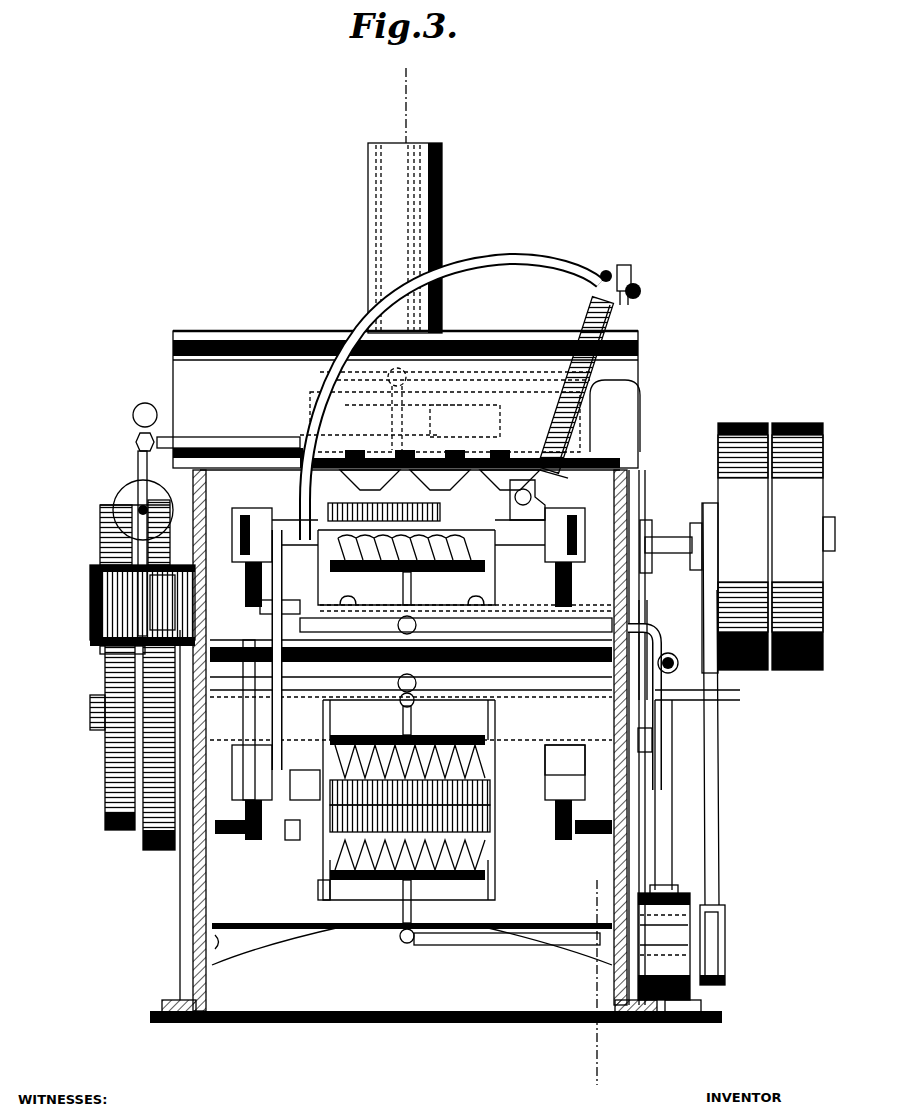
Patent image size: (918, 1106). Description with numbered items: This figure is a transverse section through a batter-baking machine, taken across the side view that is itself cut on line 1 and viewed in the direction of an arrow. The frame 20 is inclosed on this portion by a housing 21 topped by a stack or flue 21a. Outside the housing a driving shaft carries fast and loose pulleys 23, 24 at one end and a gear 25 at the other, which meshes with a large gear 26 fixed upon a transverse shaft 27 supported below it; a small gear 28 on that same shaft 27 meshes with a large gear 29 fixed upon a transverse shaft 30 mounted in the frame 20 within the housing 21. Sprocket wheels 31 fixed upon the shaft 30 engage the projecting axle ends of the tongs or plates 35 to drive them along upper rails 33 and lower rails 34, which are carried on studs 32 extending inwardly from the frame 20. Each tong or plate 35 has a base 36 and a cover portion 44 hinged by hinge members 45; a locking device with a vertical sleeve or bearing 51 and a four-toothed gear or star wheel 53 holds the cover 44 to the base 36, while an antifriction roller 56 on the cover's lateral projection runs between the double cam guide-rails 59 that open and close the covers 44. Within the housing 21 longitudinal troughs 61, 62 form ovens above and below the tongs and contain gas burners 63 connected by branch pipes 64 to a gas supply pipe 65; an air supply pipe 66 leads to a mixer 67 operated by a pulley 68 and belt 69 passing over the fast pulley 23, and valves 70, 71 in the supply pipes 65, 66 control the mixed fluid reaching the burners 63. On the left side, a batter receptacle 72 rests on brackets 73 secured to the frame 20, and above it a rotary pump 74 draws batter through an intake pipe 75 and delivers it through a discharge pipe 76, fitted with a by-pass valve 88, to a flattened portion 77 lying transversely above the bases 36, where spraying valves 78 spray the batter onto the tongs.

The section line 1 is at (509, 576).
The stack or flue 21a is at (368, 220).
The housing 21 is at (406, 400).
The double cam guide-rails 59 is at (576, 264).
The antifriction roller 56 is at (623, 264).
The cover portion 44 is at (560, 405).
The hinge member 45 is at (527, 495).
The base 36 is at (409, 654).
The gas burner 63 is at (407, 723).
The branch pipe 64 is at (462, 960).
The longitudinal trough 61 is at (360, 401).
The discharge pipe 76 is at (258, 436).
The by-pass valve 88 is at (134, 442).
The rotary pump 74 is at (136, 490).
The gear 25 is at (100, 510).
The batter receptacle 72 is at (90, 602).
The large gear 26 is at (82, 791).
The bracket 73 is at (100, 660).
The transverse shaft 27 is at (90, 710).
The small gear 28 is at (105, 752).
The large gear 29 is at (160, 852).
The frame 20 is at (207, 892).
The upper roller guide or rail 33 is at (240, 530).
The stud 32 is at (409, 692).
The sprocket wheel 31 is at (540, 600).
The transverse shaft 30 is at (289, 620).
The tong or plate 35 is at (569, 754).
The lower roller guide or rail 34 is at (262, 840).
The vertical sleeve or bearing 51 is at (290, 842).
The four-toothed gear or star wheel 53 is at (293, 794).
The longitudinal trough 62 is at (318, 895).
The gas supply pipe 65 is at (735, 697).
The air supply pipe 66 is at (672, 718).
The valve 70 is at (666, 752).
The valve 71 is at (678, 663).
The fast pulley 23 is at (704, 537).
The loose pulley 24 is at (782, 400).
The belt 69 is at (720, 822).
The pulley 68 is at (727, 912).
The mixer 67 is at (664, 946).
The intake pipe 75 is at (356, 448).
The flattened portion 77 is at (440, 455).
The spraying valve 78 is at (478, 455).